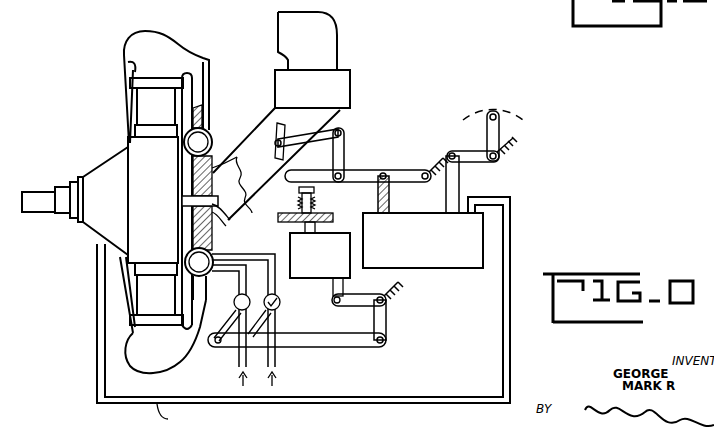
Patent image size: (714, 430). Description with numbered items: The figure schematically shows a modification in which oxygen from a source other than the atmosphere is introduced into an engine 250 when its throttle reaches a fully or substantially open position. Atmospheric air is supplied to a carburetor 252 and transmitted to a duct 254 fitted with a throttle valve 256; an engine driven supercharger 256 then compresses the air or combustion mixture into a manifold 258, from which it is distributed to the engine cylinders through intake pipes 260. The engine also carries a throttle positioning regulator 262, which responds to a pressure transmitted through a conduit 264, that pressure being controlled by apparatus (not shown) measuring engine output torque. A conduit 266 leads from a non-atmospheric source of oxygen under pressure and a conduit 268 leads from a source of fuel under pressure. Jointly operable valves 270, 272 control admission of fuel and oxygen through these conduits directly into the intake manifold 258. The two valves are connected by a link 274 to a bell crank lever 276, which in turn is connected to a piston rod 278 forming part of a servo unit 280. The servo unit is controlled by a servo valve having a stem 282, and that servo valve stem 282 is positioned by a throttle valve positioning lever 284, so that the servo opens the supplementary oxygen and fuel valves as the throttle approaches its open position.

The engine 250 is at (172, 193).
The carburetor 252 is at (340, 88).
The duct 254 is at (255, 141).
The throttle valve 256 is at (278, 126).
The manifold 258 is at (185, 255).
The intake pipes 260 is at (200, 68).
The throttle positioning regulator 262 is at (441, 260).
The conduit 264 is at (421, 401).
The oxygen conduit 266 is at (276, 360).
The fuel conduit 268 is at (239, 360).
The valve 270 is at (280, 297).
The valve 272 is at (236, 296).
The link 274 is at (349, 342).
The bell crank lever 276 is at (386, 322).
The piston rod 278 is at (332, 290).
The servo unit 280 is at (290, 243).
The servo valve stem 282 is at (313, 191).
The throttle valve positioning lever 284 is at (360, 153).